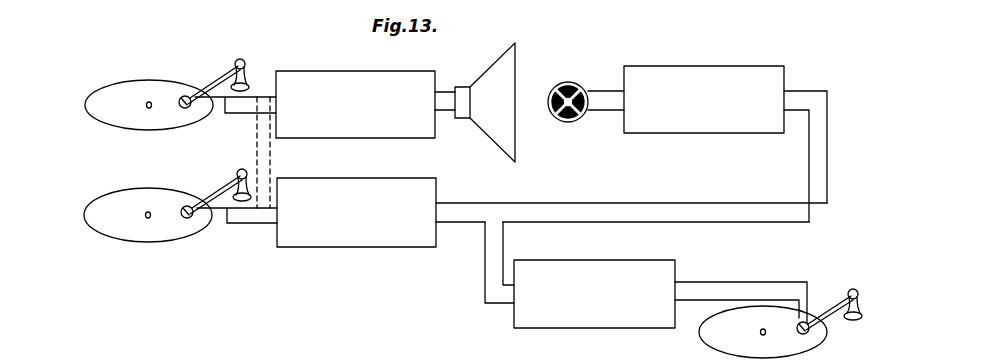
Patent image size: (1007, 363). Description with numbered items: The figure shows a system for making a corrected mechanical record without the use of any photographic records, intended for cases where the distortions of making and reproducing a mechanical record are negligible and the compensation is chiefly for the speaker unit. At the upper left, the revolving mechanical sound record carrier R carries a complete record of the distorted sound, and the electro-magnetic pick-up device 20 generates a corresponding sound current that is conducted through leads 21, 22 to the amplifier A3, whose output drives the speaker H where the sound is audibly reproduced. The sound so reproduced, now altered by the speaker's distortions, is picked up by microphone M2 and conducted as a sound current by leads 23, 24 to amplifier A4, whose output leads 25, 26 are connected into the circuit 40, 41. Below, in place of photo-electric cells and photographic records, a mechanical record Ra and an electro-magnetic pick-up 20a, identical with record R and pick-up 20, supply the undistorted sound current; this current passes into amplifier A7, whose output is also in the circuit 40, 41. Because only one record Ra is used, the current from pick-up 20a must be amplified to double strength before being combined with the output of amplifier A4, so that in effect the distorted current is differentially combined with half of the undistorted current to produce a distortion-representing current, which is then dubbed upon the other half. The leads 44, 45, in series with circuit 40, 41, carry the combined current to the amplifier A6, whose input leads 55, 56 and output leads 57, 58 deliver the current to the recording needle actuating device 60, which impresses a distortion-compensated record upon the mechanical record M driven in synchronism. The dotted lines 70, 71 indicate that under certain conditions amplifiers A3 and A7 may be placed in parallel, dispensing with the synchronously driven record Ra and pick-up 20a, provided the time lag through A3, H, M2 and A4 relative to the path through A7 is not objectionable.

The revolving mechanical sound record carrier R is at (126, 91).
The electro-magnetic pick-up device 20 is at (182, 98).
The lead 21 is at (250, 80).
The lead 22 is at (248, 113).
The amplifier A3 is at (336, 76).
The dotted line 70 is at (257, 152).
The dotted line 71 is at (272, 156).
The speaker H is at (492, 126).
The microphone M2 is at (570, 82).
The lead 23 is at (615, 88).
The lead 24 is at (610, 114).
The amplifier A4 is at (706, 76).
The output lead 25 is at (814, 92).
The output lead 26 is at (795, 114).
The mechanical record Ra is at (130, 236).
The electro-magnetic pick-up 20a is at (185, 218).
The amplifier A7 is at (352, 245).
The circuit 40 is at (495, 200).
The circuit 41 is at (472, 224).
The lead 44 is at (476, 262).
The lead 45 is at (508, 250).
The lead 55 is at (509, 270).
The lead 56 is at (500, 304).
The amplifier A6 is at (634, 272).
The lead 57 is at (728, 262).
The lead 58 is at (718, 298).
The mechanical record M is at (718, 334).
The recording needle actuating device 60 is at (812, 333).